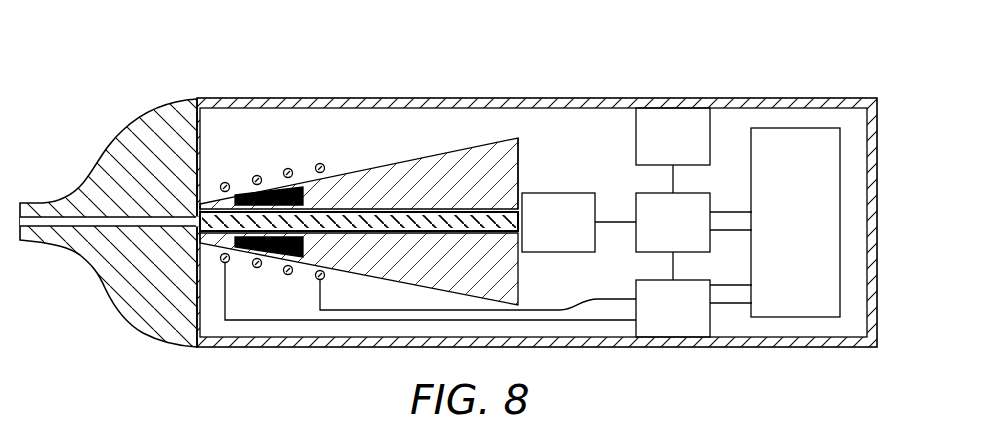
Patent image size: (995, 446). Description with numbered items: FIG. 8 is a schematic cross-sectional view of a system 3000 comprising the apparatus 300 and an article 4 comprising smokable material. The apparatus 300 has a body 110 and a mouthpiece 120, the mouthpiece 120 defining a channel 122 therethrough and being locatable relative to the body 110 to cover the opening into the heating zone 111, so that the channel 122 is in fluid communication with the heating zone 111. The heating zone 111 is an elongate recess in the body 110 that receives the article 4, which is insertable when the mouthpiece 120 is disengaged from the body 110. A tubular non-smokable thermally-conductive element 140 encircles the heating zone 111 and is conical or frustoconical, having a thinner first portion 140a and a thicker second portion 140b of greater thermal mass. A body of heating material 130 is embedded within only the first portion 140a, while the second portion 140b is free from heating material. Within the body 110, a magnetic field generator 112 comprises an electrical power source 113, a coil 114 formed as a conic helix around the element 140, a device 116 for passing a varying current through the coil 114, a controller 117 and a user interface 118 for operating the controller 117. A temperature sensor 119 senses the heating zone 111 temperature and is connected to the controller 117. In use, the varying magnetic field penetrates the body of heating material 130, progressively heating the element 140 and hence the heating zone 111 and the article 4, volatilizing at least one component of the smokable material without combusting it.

The system 3000 is at (825, 75).
The apparatus 300 is at (443, 77).
The body 110 is at (572, 97).
The magnetic field generator 112 is at (730, 128).
The electrical power source 113 is at (815, 233).
The device for passing a varying electrical current 116 is at (692, 319).
The controller 117 is at (692, 233).
The user interface 118 is at (692, 148).
The temperature sensor 119 is at (577, 233).
The mouthpiece 120 is at (120, 137).
The channel 122 is at (117, 227).
The body of heating material 130 is at (241, 190).
The non-smokable thermally-conductive element 140 is at (383, 185).
The first portion of the element 140a is at (205, 204).
The second portion of the element 140b is at (480, 193).
The heating zone 111 is at (308, 214).
The coil 114 is at (290, 275).
The article 4 is at (353, 224).